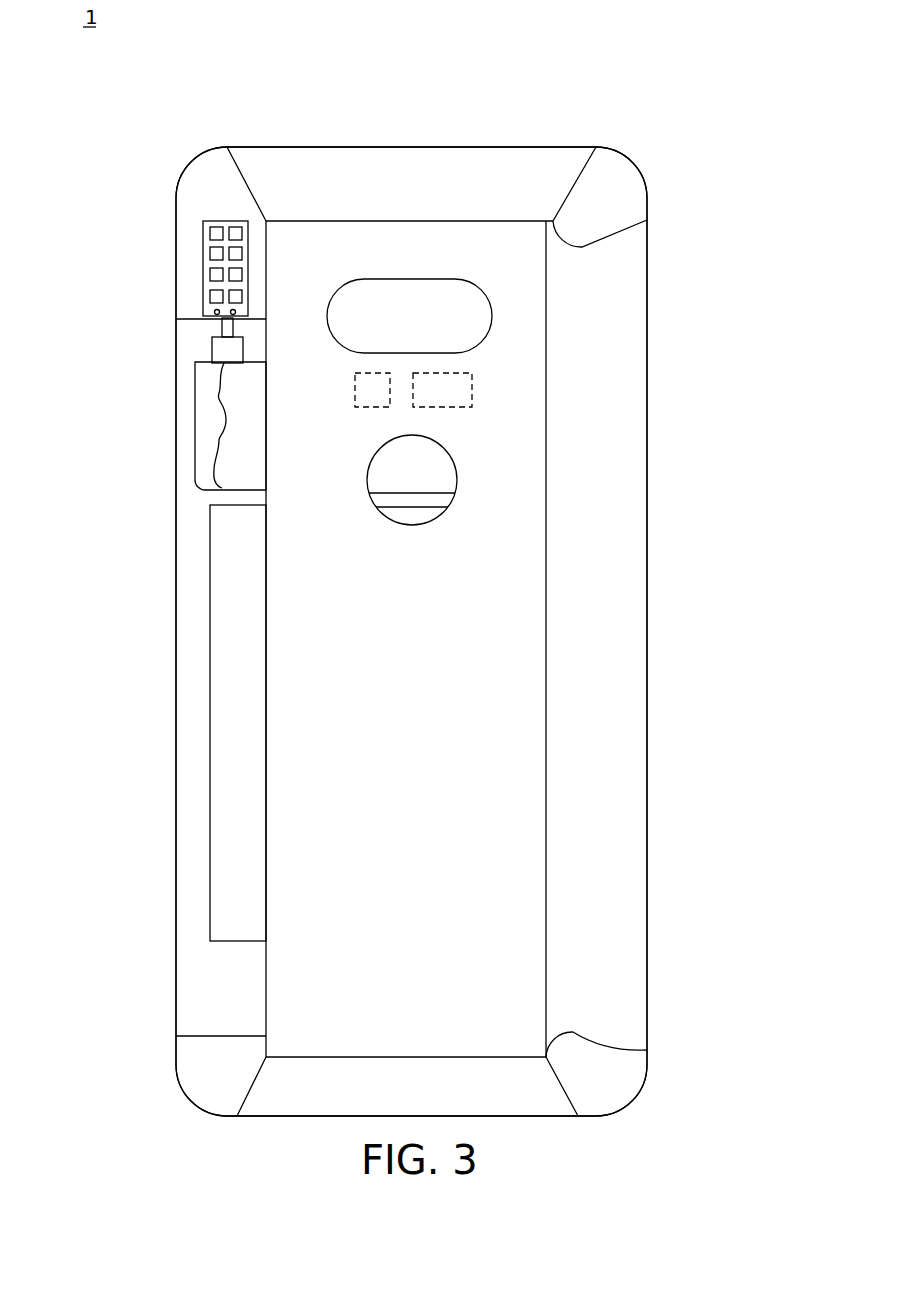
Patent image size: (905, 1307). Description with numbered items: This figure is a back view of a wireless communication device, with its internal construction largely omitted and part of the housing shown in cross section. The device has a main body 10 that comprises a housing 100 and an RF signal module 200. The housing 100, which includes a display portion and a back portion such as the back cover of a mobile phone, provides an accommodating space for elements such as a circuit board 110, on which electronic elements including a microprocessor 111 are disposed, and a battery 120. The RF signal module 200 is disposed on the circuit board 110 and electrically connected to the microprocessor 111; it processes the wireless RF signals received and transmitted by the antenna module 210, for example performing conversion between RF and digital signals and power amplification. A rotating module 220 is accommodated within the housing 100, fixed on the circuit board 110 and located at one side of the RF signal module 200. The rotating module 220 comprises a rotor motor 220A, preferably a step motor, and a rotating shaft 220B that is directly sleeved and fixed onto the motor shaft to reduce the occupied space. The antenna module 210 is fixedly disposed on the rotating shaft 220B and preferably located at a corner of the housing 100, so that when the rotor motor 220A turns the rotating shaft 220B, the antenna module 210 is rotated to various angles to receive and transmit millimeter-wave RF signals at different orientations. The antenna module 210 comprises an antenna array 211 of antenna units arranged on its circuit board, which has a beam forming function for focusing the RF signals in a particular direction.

The main body 10 is at (661, 100).
The housing 100 is at (648, 313).
The circuit board 110 is at (242, 470).
The microprocessor 111 is at (457, 390).
The battery 120 is at (233, 655).
The RF signal module 200 is at (372, 385).
The antenna module 210 is at (167, 194).
The antenna array 211 is at (217, 232).
The rotating module 220 is at (227, 353).
The rotor motor 220A is at (227, 363).
The rotating shaft 220B is at (223, 328).